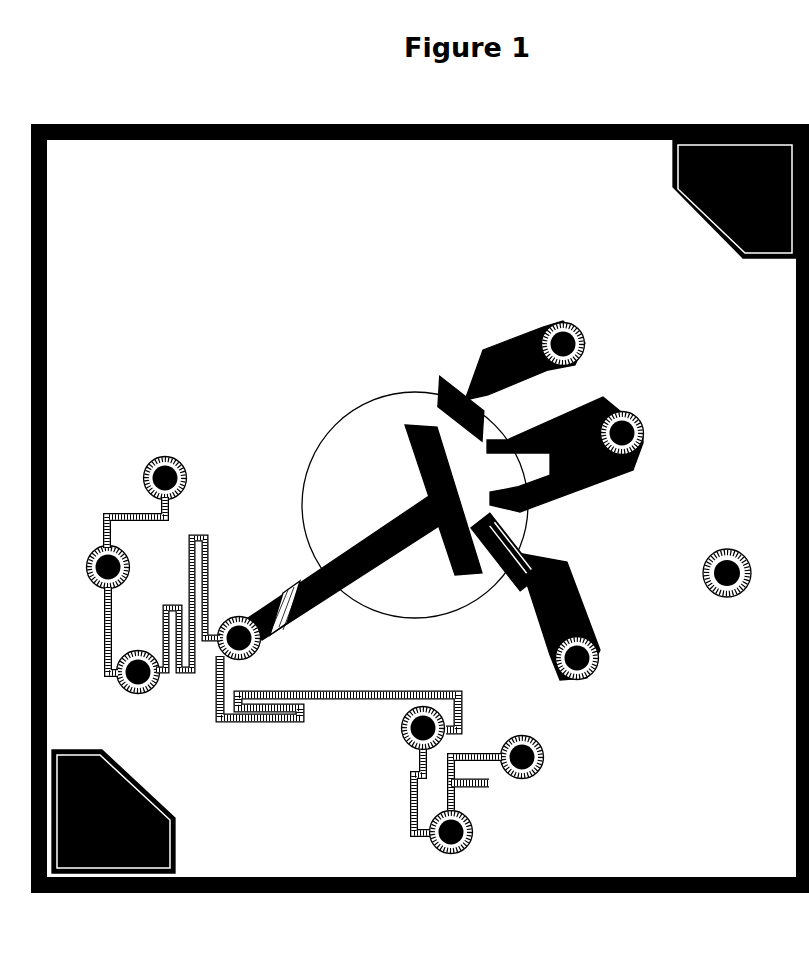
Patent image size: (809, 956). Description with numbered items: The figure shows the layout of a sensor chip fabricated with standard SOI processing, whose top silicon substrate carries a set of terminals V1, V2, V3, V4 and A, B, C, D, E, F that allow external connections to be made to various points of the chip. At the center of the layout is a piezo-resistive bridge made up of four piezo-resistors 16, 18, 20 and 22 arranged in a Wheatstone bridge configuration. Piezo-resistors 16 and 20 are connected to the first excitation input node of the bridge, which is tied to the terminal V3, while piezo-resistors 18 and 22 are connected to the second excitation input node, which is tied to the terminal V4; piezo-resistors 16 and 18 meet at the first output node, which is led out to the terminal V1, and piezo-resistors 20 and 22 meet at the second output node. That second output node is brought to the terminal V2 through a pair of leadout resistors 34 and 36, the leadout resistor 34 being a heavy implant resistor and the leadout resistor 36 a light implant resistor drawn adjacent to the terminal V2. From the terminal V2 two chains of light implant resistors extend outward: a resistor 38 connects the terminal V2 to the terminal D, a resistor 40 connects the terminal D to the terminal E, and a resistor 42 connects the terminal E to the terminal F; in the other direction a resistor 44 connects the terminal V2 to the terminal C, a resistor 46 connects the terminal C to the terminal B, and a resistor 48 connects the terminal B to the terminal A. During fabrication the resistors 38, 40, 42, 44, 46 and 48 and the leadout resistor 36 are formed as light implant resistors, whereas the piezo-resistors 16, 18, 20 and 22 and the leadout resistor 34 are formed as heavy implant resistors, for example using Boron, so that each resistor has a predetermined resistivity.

The piezo-resistor 16 is at (545, 548).
The piezo-resistor 18 is at (495, 420).
The piezo-resistor 20 is at (515, 580).
The piezo-resistor 22 is at (428, 417).
The leadout resistor 34 is at (372, 544).
The leadout resistor 36 is at (286, 595).
The resistor 38 is at (267, 707).
The resistor 40 is at (412, 798).
The resistor 42 is at (485, 778).
The resistor 44 is at (178, 650).
The resistor 46 is at (107, 627).
The resistor 48 is at (128, 515).
The terminal A is at (165, 463).
The terminal B is at (94, 567).
The terminal C is at (138, 691).
The terminal D is at (406, 730).
The terminal E is at (466, 834).
The terminal F is at (536, 757).
The terminal V1 is at (591, 454).
The terminal V2 is at (260, 645).
The terminal V3 is at (584, 619).
The terminal V4 is at (543, 350).